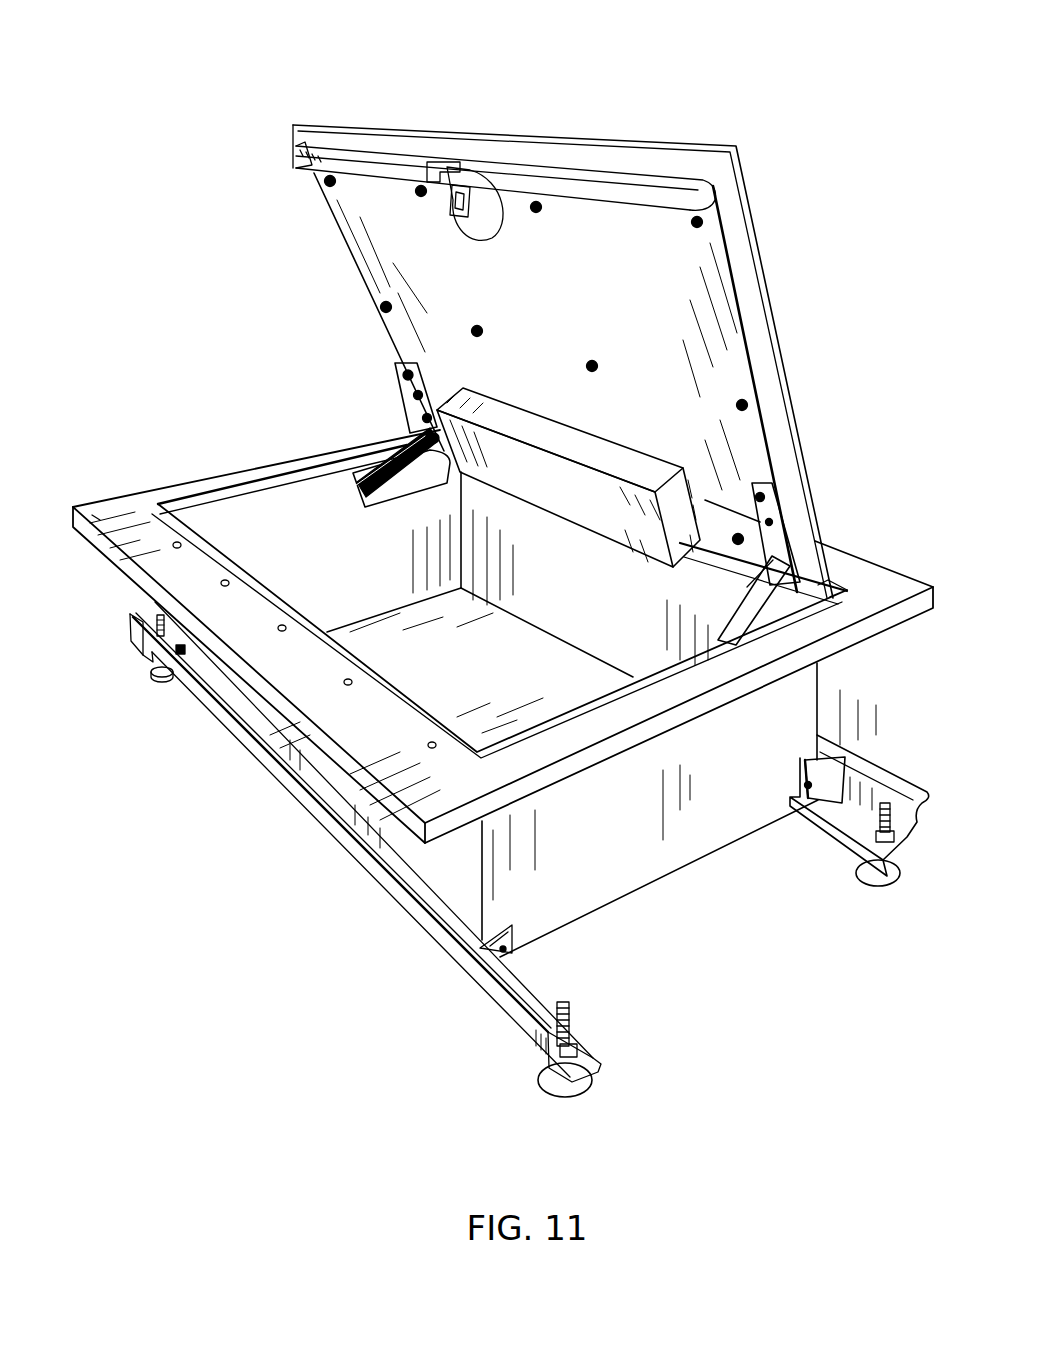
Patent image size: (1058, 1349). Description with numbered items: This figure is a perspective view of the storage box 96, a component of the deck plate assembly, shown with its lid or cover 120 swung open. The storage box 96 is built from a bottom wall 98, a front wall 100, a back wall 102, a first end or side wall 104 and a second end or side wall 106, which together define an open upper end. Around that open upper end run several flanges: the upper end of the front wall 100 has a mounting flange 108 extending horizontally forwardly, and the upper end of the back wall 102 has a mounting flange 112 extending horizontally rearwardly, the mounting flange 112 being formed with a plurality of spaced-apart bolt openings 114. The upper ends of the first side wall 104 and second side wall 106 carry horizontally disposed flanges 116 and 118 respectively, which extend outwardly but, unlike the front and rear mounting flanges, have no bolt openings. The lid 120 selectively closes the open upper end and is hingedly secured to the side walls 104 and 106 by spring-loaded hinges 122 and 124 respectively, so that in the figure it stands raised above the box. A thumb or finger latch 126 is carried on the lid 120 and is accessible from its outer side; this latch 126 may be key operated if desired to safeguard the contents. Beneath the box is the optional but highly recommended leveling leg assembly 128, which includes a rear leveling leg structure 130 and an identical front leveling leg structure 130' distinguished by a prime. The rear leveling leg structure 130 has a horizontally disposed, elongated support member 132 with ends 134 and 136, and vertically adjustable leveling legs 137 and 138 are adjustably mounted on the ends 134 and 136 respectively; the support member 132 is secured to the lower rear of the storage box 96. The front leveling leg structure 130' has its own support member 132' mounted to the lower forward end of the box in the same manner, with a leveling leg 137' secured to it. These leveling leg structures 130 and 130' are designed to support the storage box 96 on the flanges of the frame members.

The storage box 96 is at (234, 410).
The bottom wall 98 is at (501, 675).
The front wall 100 is at (572, 615).
The back wall 102 is at (420, 860).
The first end or side wall 104 is at (289, 565).
The second end or side wall 106 is at (623, 840).
The mounting flange 108 is at (860, 570).
The mounting flange 112 is at (160, 553).
The bolt openings 114 is at (430, 745).
The flange 116 is at (210, 494).
The flange 118 is at (683, 683).
The lid or cover 120 is at (668, 135).
The spring-loaded hinge 122 is at (400, 458).
The spring-loaded hinge 124 is at (793, 565).
The thumb or finger latch 126 is at (470, 168).
The leveling leg assembly 128 is at (240, 857).
The rear leveling leg structure 130 is at (363, 830).
The front leveling leg structure 130' is at (883, 750).
The support member 132 is at (345, 848).
The support member 132' is at (863, 880).
The end 134 is at (130, 607).
The end 136 is at (602, 1060).
The leveling leg 137 is at (112, 720).
The leveling leg 137' is at (849, 922).
The leveling leg 138 is at (535, 1087).